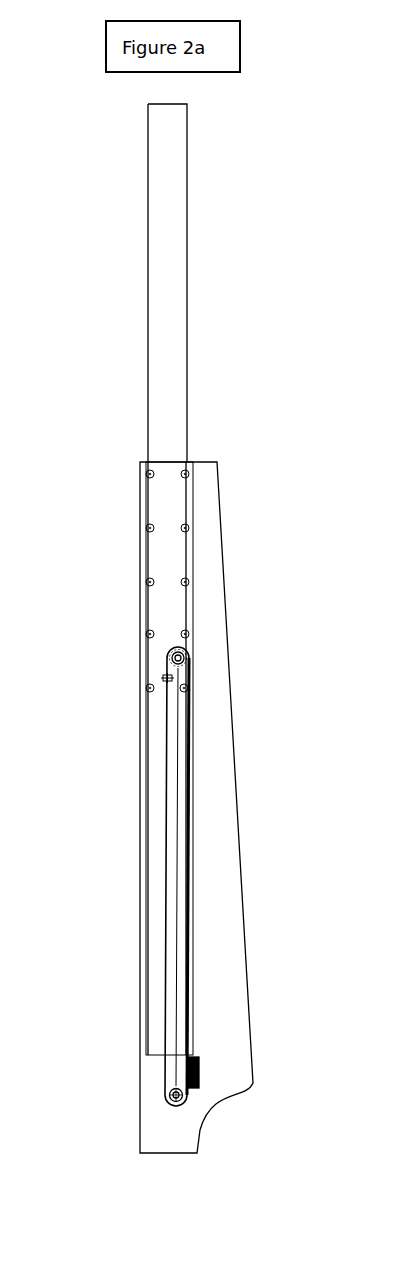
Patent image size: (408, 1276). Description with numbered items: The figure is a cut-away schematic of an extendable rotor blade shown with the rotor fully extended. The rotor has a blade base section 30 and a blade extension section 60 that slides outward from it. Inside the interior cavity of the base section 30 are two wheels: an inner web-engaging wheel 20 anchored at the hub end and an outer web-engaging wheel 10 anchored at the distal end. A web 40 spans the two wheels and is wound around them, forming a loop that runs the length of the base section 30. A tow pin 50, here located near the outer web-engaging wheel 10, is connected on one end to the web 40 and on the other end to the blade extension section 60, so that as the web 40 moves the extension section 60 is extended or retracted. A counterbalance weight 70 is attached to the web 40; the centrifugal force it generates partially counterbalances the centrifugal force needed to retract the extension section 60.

The outer web-engaging wheel 10 is at (206, 655).
The inner web-engaging wheel 20 is at (154, 1102).
The blade base section 30 is at (252, 857).
The web 40 is at (153, 883).
The tow pin 50 is at (150, 676).
The blade extension section 60 is at (199, 246).
The counterbalance weight 70 is at (210, 1062).